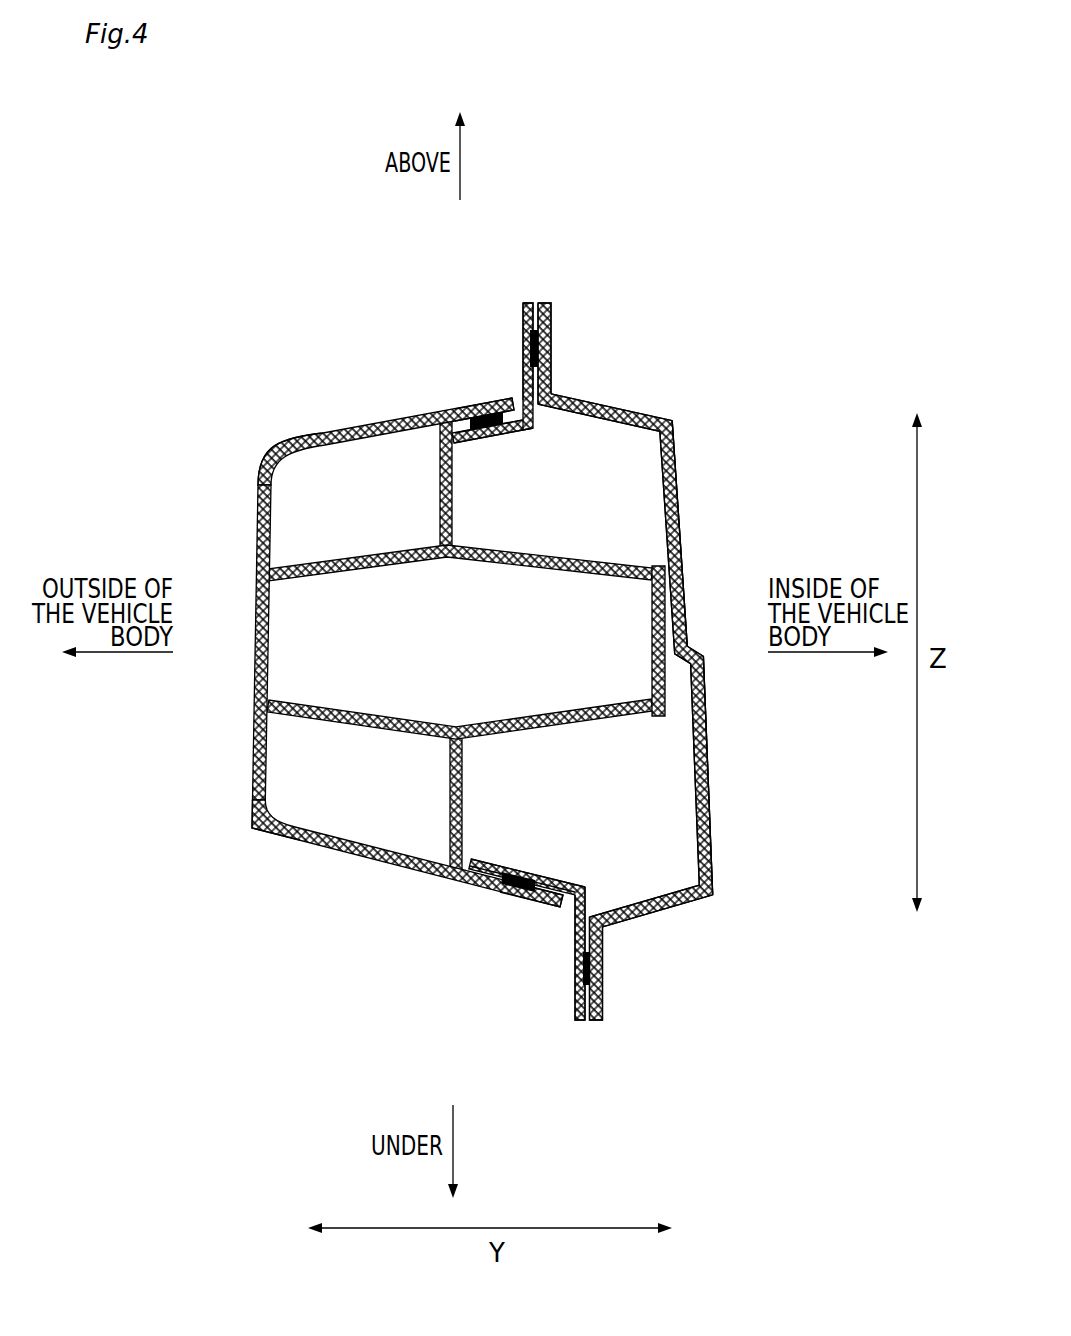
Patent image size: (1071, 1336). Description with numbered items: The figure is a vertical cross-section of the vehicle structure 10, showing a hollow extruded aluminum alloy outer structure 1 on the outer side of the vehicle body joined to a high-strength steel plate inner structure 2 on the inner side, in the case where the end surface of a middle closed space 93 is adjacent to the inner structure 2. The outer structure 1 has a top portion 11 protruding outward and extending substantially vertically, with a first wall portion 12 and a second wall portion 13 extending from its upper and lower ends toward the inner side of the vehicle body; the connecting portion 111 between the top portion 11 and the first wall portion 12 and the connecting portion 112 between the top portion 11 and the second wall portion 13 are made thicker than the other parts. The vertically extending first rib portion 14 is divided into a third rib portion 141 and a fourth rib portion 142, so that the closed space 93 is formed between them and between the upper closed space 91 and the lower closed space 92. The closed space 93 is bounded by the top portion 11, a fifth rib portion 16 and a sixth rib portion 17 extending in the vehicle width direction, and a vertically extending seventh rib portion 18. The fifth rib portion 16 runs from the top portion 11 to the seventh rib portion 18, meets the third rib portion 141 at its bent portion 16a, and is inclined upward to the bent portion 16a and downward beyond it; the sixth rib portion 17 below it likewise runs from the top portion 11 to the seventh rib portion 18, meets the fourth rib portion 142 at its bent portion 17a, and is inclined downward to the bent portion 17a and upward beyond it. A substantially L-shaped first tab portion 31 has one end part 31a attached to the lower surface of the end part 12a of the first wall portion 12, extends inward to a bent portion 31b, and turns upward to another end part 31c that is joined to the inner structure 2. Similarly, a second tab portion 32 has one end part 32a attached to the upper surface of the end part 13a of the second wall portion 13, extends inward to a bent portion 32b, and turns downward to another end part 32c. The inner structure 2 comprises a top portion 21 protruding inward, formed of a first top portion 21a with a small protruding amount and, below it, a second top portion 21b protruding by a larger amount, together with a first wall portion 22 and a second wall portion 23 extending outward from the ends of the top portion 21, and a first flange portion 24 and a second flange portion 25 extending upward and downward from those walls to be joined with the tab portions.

The outer structure 1 is at (299, 377).
The inner structure 2 is at (727, 376).
The vehicle structure 10 is at (552, 185).
The top portion 11 is at (260, 541).
The first wall portion 12 is at (361, 433).
The end part 12a is at (457, 410).
The second wall portion 13 is at (387, 867).
The end part 13a is at (500, 893).
The first rib portion 14 is at (486, 503).
The third rib portion 141 is at (454, 537).
The fourth rib portion 142 is at (464, 778).
The fifth rib portion 16 is at (403, 545).
The bent portion 16a is at (452, 558).
The sixth rib portion 17 is at (365, 727).
The bent portion 17a is at (458, 724).
The seventh rib portion 18 is at (662, 600).
The top portion 21 is at (736, 471).
The first top portion 21a is at (683, 554).
The second top portion 21b is at (711, 811).
The first wall portion 22 is at (618, 412).
The second wall portion 23 is at (667, 908).
The first flange portion 24 is at (552, 317).
The second flange portion 25 is at (603, 1013).
The first tab portion 31 is at (492, 328).
The one end part 31a is at (508, 430).
The bent portion 31b is at (532, 425).
The another end part 31c is at (524, 302).
The second tab portion 32 is at (542, 968).
The one end part 32a is at (514, 870).
The bent portion 32b is at (586, 890).
The another end part 32c is at (577, 1022).
The closed space 91 is at (312, 497).
The closed space 92 is at (310, 747).
The closed space 93 is at (310, 600).
The connecting portion 111 is at (282, 466).
The connecting portion 112 is at (270, 827).